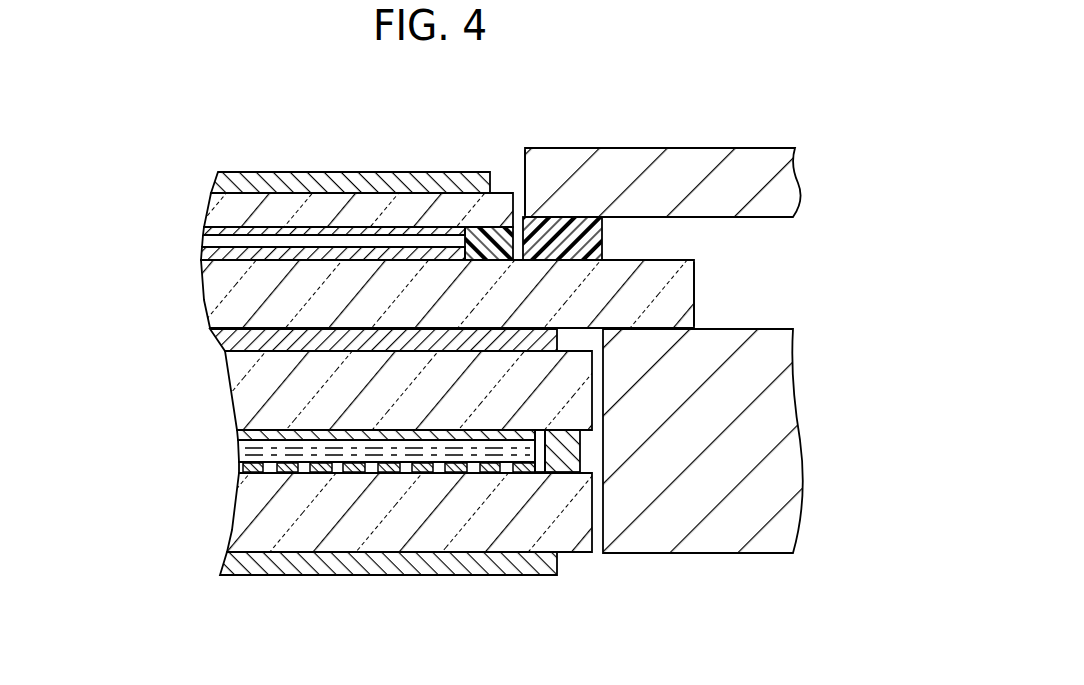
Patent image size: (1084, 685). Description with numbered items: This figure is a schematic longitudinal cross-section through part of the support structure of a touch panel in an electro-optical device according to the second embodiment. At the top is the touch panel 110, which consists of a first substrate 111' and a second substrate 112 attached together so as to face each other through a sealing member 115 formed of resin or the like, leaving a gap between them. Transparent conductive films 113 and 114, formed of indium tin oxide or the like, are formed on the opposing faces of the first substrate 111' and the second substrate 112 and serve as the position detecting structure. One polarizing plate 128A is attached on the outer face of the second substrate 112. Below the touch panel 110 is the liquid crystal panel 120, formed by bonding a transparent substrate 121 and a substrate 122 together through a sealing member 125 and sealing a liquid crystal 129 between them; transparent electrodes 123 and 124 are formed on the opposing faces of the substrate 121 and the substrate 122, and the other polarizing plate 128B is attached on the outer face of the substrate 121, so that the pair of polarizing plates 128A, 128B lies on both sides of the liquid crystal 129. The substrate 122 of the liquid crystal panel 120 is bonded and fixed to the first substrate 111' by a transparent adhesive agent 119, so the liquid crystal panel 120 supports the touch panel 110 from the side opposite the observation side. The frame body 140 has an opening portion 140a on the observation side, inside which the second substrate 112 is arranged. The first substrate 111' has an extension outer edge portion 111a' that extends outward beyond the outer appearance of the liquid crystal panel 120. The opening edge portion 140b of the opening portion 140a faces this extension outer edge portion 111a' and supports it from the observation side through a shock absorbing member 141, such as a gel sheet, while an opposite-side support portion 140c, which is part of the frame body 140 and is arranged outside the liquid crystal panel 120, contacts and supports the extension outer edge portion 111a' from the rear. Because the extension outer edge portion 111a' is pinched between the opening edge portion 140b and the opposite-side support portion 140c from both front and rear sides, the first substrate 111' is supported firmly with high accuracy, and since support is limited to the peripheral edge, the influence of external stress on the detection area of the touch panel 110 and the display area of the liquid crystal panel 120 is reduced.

The touch panel 110 is at (208, 327).
The liquid crystal panel 120 is at (216, 575).
The polarizing plate 128A is at (254, 172).
The second substrate 112 is at (348, 200).
The transparent conductive film 114 is at (204, 232).
The transparent conductive film 113 is at (203, 257).
The sealing member 115 is at (489, 227).
The first substrate 111' is at (522, 288).
The extension outer edge portion 111a' is at (740, 294).
The shock absorbing member 141 is at (600, 240).
The frame body 140 is at (728, 158).
The opening portion 140a is at (524, 170).
The opening edge portion 140b is at (575, 149).
The opposite-side support portion 140c is at (648, 328).
The transparent adhesive agent 119 is at (560, 340).
The substrate 122 is at (510, 415).
The transparent electrode 124 is at (240, 437).
The sealing member 125 is at (557, 472).
The liquid crystal 129 is at (240, 458).
The transparent electrode 123 is at (240, 468).
The transparent substrate 121 is at (416, 545).
The polarizing plate 128B is at (296, 570).